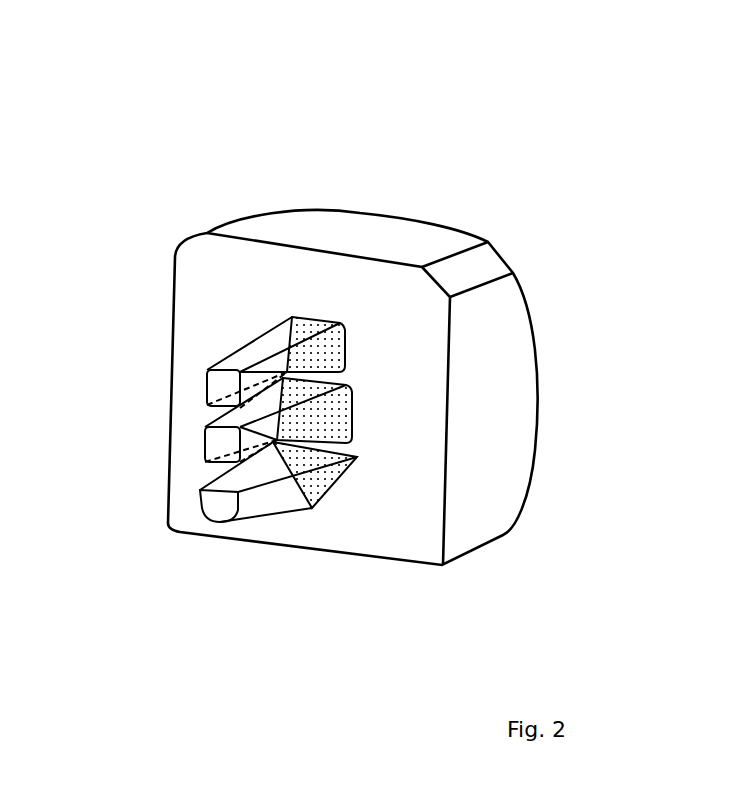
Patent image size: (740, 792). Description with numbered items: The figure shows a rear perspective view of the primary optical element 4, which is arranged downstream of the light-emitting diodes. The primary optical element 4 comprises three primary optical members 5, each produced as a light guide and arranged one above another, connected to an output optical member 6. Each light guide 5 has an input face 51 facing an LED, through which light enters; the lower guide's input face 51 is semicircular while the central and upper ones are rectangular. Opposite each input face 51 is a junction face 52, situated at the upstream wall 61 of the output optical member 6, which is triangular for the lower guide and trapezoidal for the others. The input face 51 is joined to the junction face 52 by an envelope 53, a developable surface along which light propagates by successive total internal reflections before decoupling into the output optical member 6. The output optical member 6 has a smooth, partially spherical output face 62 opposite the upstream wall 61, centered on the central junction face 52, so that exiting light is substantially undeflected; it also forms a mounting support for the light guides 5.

The primary optical element 4 is at (395, 170).
The primary optical members 5 is at (181, 494).
The output optical member 6 is at (511, 431).
The input face 51 is at (227, 388).
The junction face 52 is at (327, 360).
The envelope 53 is at (322, 460).
The upstream wall 61 is at (197, 273).
The output face 62 is at (530, 308).